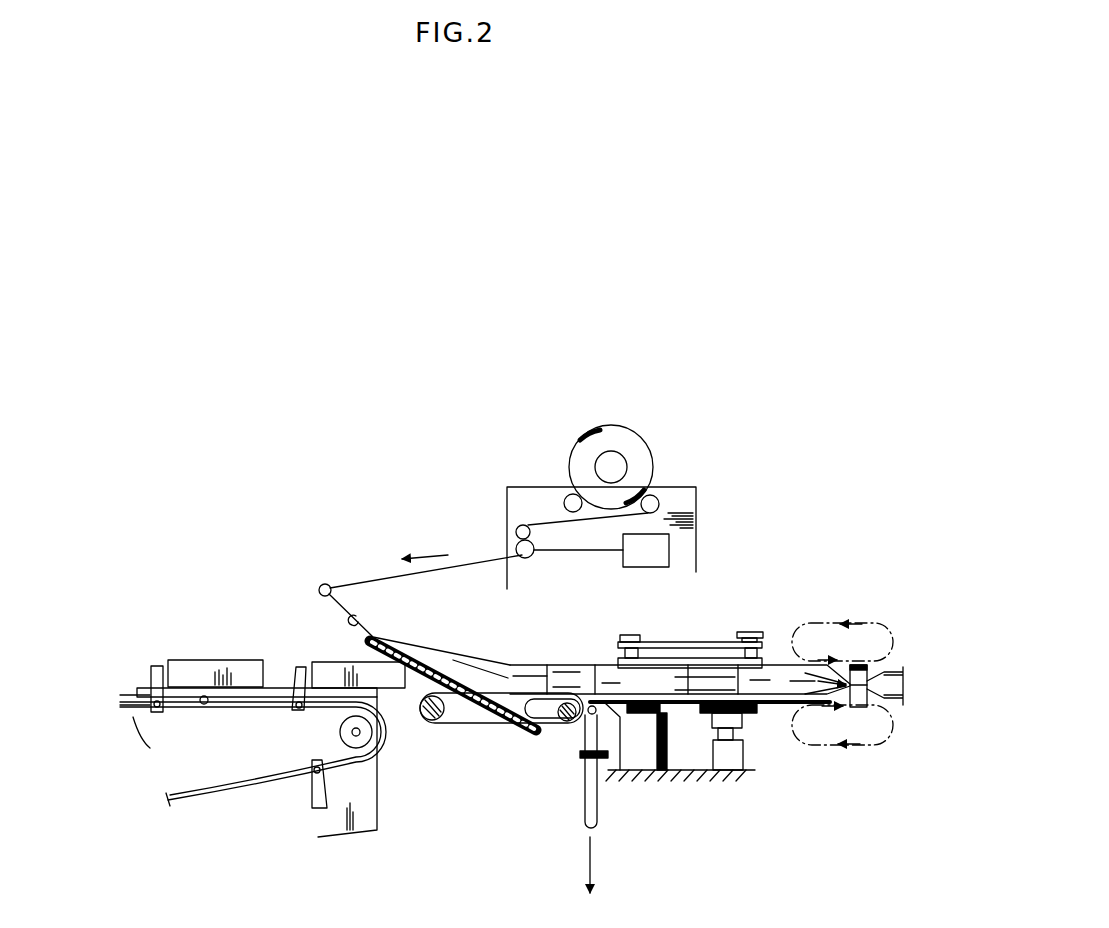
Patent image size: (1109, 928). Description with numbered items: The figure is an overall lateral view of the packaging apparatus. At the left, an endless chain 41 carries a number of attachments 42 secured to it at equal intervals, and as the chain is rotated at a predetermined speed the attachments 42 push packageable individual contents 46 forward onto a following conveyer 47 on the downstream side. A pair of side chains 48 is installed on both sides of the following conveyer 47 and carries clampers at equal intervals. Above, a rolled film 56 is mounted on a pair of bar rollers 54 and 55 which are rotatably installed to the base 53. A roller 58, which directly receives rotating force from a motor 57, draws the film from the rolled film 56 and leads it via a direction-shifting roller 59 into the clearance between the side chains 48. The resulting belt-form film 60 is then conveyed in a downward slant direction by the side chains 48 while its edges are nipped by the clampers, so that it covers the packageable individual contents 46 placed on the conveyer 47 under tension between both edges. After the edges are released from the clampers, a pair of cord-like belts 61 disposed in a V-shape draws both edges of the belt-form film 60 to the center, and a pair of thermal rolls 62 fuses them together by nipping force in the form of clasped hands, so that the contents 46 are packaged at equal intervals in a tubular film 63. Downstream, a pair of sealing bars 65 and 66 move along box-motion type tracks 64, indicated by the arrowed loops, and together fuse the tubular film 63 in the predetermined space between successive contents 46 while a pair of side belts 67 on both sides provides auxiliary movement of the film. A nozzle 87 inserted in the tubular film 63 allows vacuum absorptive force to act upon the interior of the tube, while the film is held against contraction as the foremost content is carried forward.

The endless chain 41 is at (205, 713).
The attachments 42 is at (300, 672).
The packageable individual contents 46 is at (342, 655).
The following conveyer 47 is at (453, 712).
The side chains 48 is at (497, 712).
The base 53 is at (696, 500).
The bar roller 54 is at (568, 503).
The bar roller 55 is at (653, 500).
The rolled film 56 is at (623, 460).
The motor 57 is at (643, 560).
The roller 58 is at (515, 545).
The direction-shifting roller 59 is at (325, 583).
The belt-form film 60 is at (362, 621).
The cord-like belts 61 is at (592, 712).
The thermal rolls 62 is at (757, 715).
The tubular film 63 is at (573, 657).
The box-motion type tracks 64 is at (880, 628).
The sealing bar 65 is at (870, 670).
The sealing bar 66 is at (880, 705).
The side belts 67 is at (710, 658).
The nozzle 87 is at (598, 806).